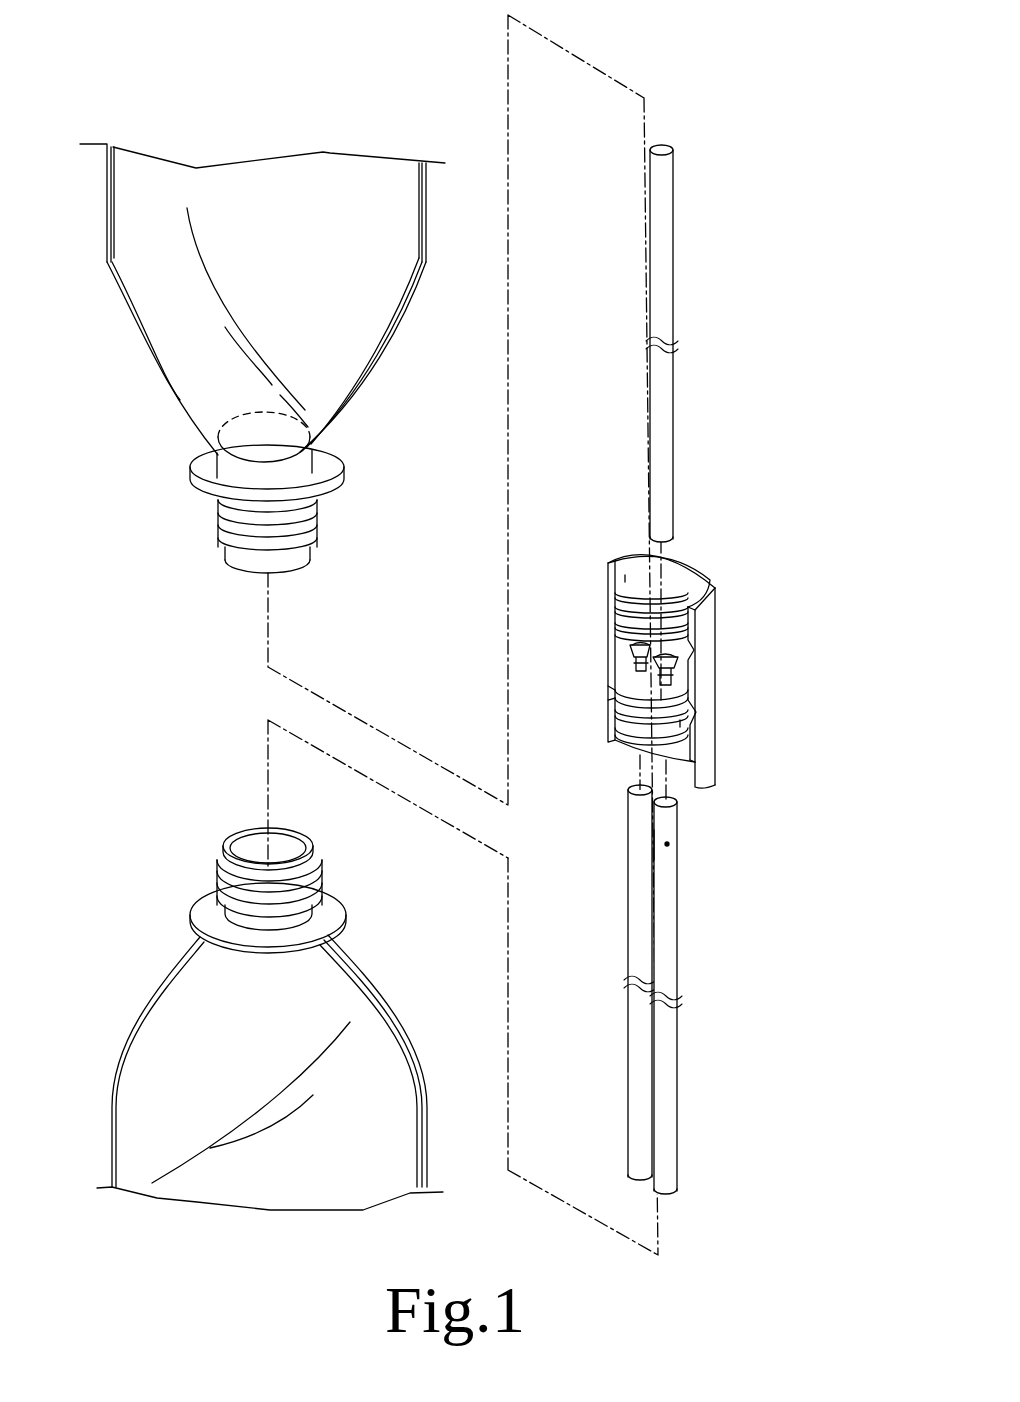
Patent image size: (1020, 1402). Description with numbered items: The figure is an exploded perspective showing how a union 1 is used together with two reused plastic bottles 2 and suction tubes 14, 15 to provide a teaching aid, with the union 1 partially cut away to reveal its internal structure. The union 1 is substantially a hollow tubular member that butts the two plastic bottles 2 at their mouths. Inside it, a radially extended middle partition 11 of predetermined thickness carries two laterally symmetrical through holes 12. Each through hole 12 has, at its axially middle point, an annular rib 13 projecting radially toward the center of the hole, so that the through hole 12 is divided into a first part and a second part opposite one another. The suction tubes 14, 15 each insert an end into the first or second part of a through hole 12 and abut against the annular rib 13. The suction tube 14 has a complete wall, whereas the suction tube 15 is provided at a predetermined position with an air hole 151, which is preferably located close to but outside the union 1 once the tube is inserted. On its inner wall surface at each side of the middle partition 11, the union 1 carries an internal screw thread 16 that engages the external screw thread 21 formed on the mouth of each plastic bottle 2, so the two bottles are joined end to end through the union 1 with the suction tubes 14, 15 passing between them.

The union 1 is at (679, 639).
The middle partition 11 is at (683, 682).
The through hole 12 is at (638, 650).
The annular rib 13 is at (645, 687).
The suction tube 14 is at (662, 289).
The suction tube 15 is at (671, 1078).
The air hole 151 is at (669, 846).
The internal screw thread 16 is at (638, 608).
The plastic bottle 2 is at (355, 430).
The external screw thread 21 is at (305, 543).